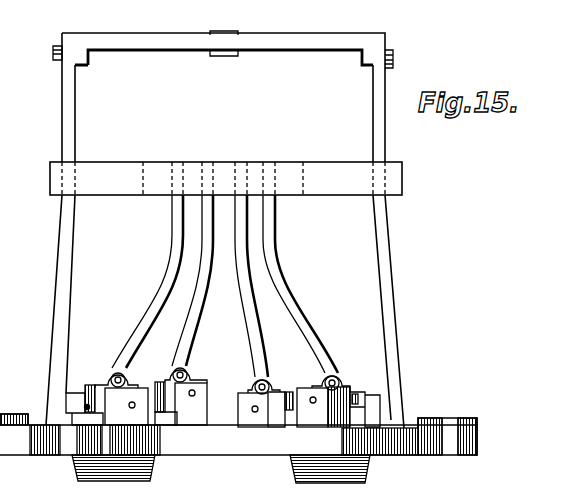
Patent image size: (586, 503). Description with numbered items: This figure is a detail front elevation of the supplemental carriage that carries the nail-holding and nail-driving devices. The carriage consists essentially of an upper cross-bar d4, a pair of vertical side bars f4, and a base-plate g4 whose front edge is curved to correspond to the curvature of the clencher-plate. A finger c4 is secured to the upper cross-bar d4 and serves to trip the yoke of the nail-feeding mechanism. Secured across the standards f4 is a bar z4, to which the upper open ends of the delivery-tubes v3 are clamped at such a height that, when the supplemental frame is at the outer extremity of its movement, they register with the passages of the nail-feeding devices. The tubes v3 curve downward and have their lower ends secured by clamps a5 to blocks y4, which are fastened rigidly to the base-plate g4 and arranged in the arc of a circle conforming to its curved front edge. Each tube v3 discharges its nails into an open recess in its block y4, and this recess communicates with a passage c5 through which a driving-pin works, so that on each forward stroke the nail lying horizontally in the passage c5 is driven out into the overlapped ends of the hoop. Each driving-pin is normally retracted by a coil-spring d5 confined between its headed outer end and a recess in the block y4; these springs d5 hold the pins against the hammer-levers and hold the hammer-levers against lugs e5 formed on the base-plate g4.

The vertical side bars f4 is at (65, 110).
The upper cross-bar d4 is at (306, 47).
The finger c4 is at (209, 57).
The bar z4 is at (318, 164).
The delivery-tubes v3 is at (171, 229).
The base-plate g4 is at (220, 437).
The lugs e5 is at (66, 397).
The passage c5 is at (131, 408).
The coil-spring d5 is at (134, 382).
The blocks y4 is at (242, 405).
The clamps a5 is at (343, 386).